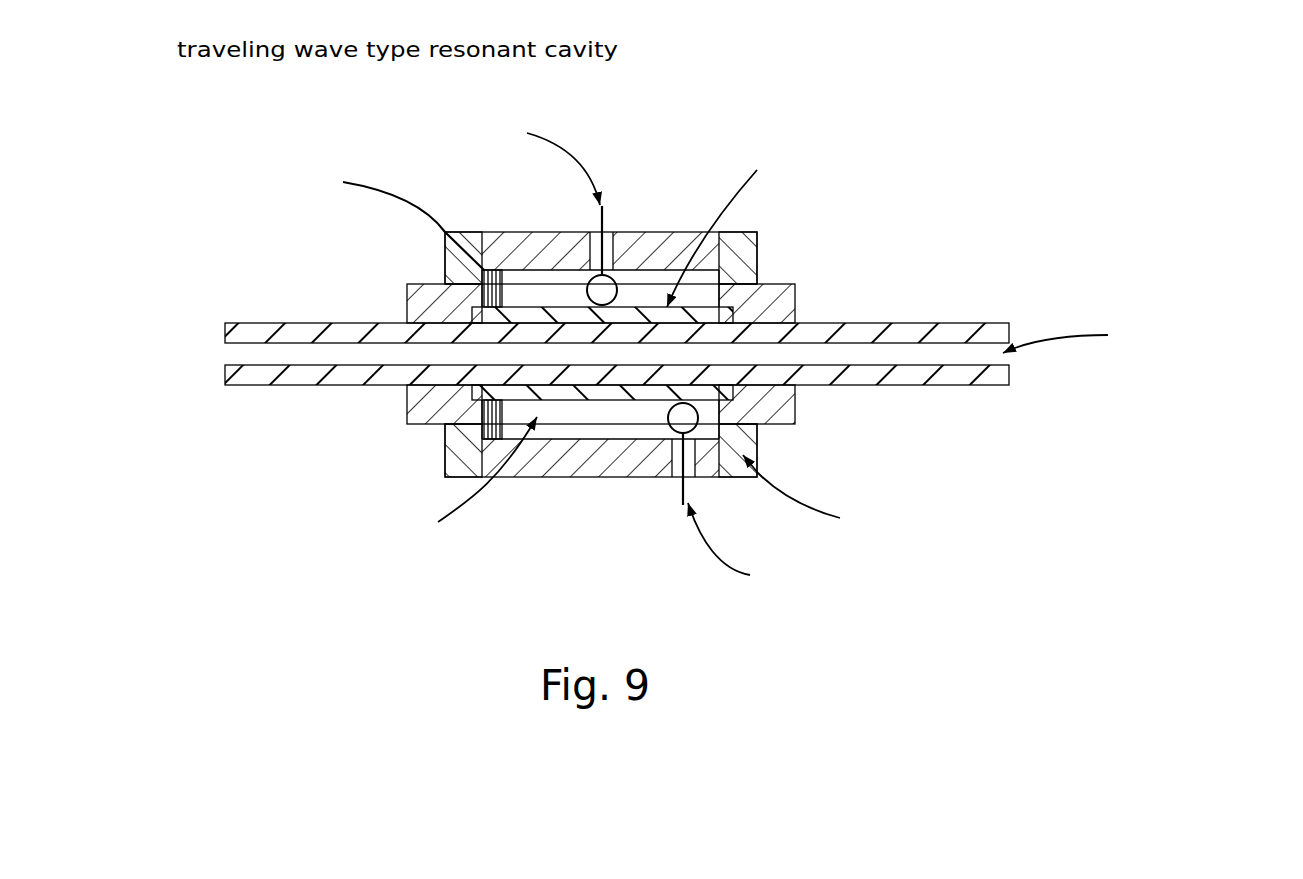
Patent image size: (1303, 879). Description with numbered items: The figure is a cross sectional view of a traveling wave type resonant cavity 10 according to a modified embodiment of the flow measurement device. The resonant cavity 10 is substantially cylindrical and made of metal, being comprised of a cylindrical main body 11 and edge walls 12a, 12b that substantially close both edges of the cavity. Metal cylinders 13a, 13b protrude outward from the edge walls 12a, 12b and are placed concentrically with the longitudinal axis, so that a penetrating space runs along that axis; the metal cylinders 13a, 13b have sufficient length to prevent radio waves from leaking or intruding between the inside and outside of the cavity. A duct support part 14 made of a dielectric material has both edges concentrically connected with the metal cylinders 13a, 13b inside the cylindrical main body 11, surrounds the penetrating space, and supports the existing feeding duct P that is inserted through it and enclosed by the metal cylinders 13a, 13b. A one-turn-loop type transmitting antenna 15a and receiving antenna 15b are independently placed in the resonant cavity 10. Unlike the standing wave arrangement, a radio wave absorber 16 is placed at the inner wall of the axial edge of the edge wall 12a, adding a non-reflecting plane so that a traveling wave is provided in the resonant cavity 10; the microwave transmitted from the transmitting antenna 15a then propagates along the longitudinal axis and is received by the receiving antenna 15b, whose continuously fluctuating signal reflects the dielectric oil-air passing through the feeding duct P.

The resonant cavity 10 is at (536, 375).
The cylindrical main body 11 is at (653, 230).
The edge wall 12a is at (445, 261).
The edge wall 12b is at (758, 263).
The metal cylinder 13a is at (405, 307).
The metal cylinder 13b is at (795, 305).
The duct support part 14 is at (590, 398).
The transmitting antenna 15a is at (603, 227).
The receiving antenna 15b is at (682, 485).
The radio wave absorber 16 is at (499, 306).
The feeding duct P is at (963, 385).